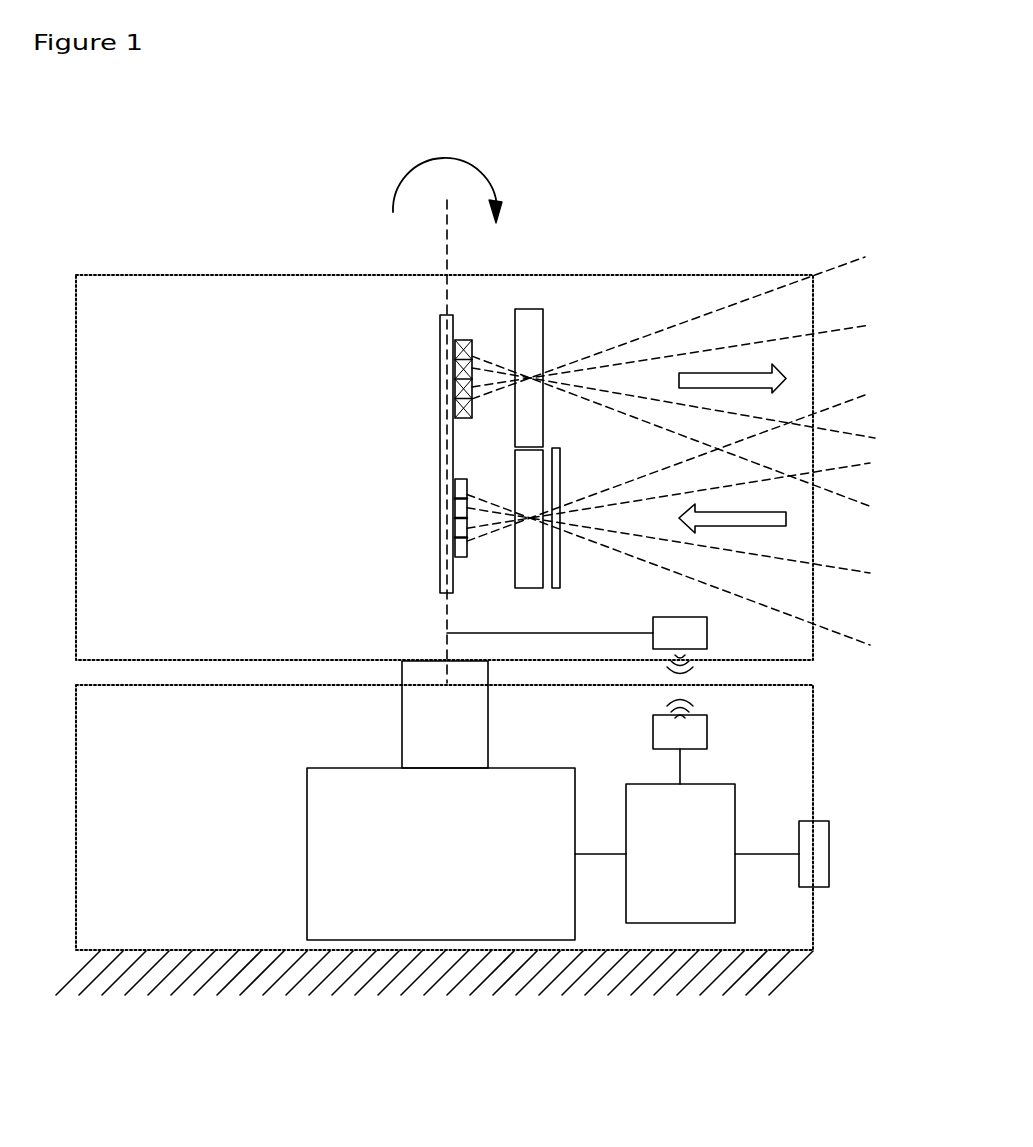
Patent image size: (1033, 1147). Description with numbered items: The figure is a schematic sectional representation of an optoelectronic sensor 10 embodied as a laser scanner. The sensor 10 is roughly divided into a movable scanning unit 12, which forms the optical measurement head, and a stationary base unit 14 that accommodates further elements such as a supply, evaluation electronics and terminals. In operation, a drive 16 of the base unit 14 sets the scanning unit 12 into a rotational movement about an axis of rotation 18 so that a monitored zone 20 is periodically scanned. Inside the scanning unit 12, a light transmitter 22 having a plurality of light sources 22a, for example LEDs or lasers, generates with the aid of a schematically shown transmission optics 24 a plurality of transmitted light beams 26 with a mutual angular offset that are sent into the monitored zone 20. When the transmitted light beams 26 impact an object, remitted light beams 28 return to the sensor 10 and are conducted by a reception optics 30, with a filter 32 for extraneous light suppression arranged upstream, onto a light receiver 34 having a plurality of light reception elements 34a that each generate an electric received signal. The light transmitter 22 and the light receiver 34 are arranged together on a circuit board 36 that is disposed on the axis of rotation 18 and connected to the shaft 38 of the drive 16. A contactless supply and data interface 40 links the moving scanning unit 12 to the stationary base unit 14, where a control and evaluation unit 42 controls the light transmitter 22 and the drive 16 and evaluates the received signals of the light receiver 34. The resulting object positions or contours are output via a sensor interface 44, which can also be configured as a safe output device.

The optoelectronic sensor 10 is at (698, 232).
The scanning unit 12 is at (115, 349).
The base unit 14 is at (110, 875).
The drive 16 is at (360, 870).
The axis of rotation 18 is at (448, 228).
The monitored zone 20 is at (888, 237).
The light transmitter 22 is at (455, 378).
The light sources 22a is at (473, 406).
The transmission optics 24 is at (537, 342).
The transmitted light beams 26 is at (827, 268).
The remitted light beams 28 is at (853, 465).
The reception optics 30 is at (525, 553).
The filter 32 is at (558, 555).
The light receiver 34 is at (465, 532).
The light reception elements 34a is at (467, 508).
The circuit board 36 is at (440, 462).
The shaft 38 is at (433, 740).
The contactless supply and data interface 40 is at (667, 642).
The control and evaluation unit 42 is at (693, 893).
The sensor interface 44 is at (818, 862).